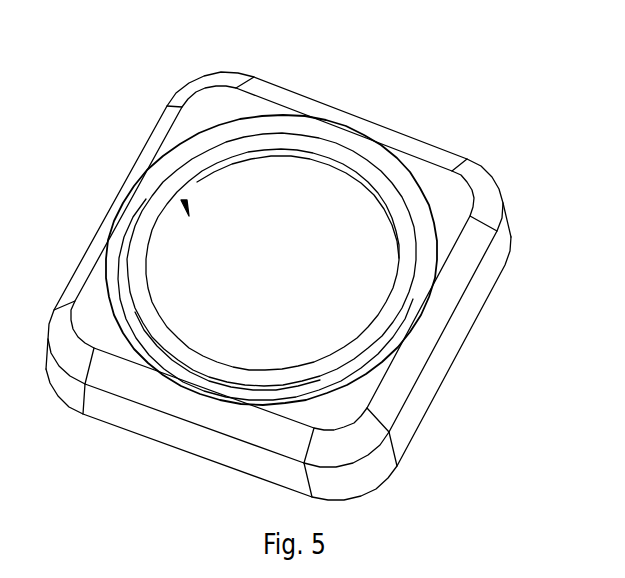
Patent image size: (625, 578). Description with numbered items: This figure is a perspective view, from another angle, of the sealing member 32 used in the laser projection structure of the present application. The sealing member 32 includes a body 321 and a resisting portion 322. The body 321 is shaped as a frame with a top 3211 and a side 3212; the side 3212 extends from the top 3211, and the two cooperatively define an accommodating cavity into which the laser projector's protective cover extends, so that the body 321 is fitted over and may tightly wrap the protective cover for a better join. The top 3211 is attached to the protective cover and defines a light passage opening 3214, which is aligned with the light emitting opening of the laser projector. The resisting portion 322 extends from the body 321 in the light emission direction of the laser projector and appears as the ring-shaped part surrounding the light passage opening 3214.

The sealing member 32 is at (294, 268).
The body 321 is at (294, 292).
The top 3211 is at (380, 483).
The side 3212 is at (411, 414).
The resisting portion 322 is at (305, 117).
The light passage opening 3214 is at (171, 193).